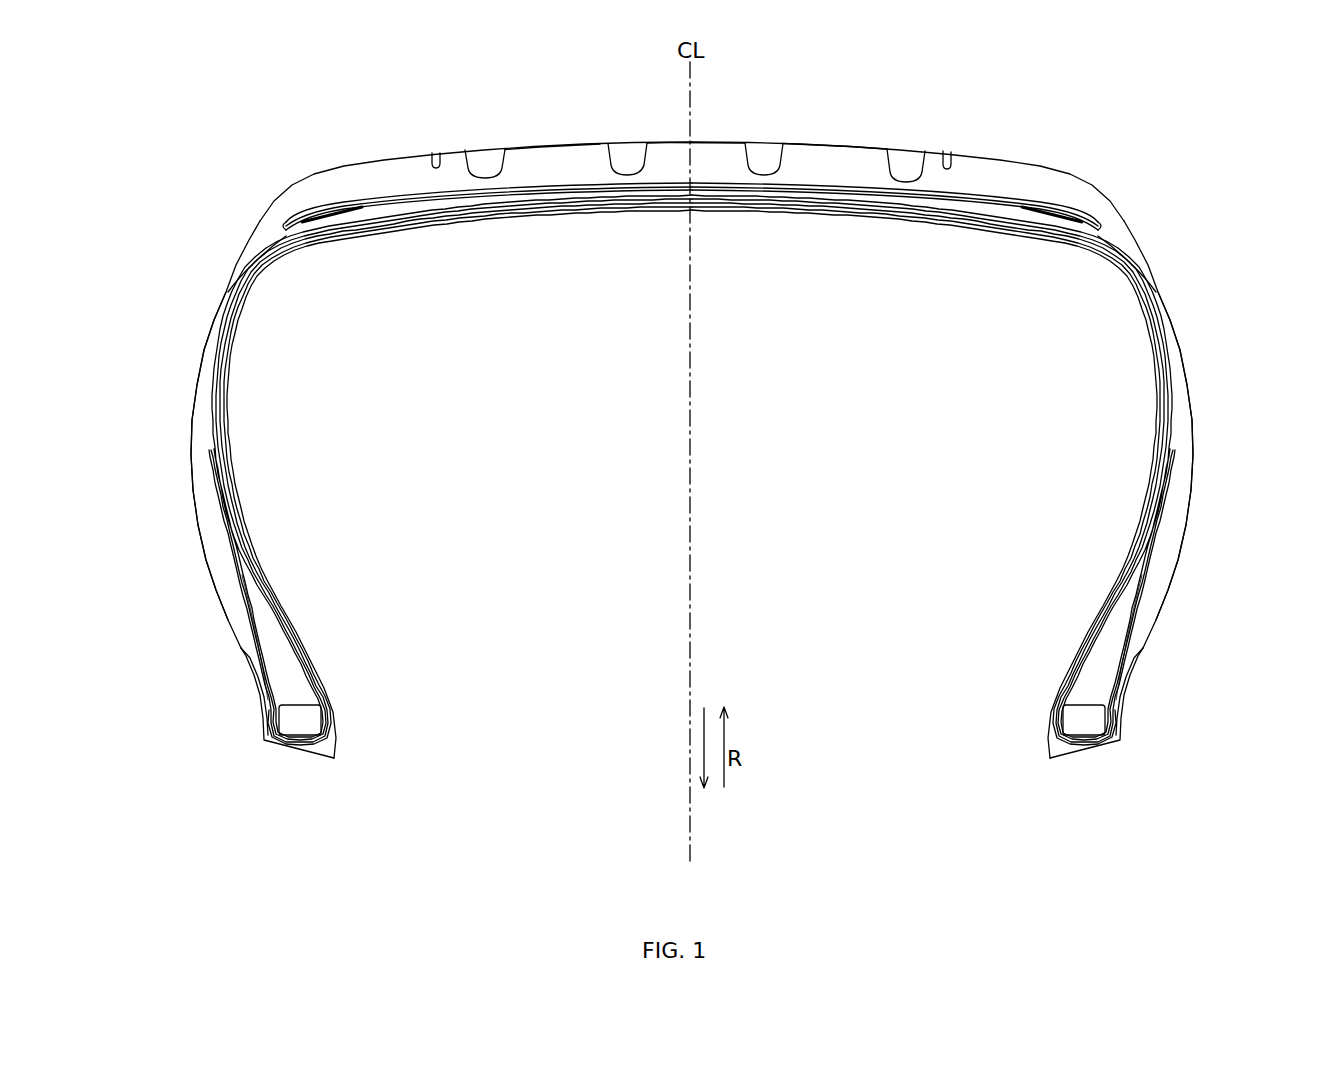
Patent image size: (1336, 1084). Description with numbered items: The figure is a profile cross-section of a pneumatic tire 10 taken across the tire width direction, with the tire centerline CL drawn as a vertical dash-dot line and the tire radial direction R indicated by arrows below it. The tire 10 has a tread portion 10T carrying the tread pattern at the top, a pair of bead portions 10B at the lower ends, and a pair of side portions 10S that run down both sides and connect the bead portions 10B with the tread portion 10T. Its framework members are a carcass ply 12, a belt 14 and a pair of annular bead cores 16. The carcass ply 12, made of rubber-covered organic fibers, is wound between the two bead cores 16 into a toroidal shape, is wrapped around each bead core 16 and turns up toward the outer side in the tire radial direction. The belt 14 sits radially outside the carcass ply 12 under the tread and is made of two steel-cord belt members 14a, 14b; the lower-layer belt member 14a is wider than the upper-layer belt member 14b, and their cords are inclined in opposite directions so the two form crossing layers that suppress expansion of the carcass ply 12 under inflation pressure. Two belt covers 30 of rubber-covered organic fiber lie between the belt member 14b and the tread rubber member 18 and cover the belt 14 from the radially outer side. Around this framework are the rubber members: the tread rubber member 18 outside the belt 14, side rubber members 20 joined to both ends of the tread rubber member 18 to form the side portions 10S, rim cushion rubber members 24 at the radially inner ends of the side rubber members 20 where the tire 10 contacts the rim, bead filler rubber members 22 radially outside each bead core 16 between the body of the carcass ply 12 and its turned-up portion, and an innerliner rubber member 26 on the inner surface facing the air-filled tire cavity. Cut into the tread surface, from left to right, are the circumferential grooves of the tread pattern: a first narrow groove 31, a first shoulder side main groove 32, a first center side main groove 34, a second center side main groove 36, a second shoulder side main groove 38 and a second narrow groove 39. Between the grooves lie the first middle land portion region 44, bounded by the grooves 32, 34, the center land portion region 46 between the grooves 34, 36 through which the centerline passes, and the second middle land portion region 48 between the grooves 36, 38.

The pneumatic tire 10 is at (952, 88).
The tread portion 10T is at (1091, 182).
The side portion 10S is at (1195, 430).
The bead portion 10B is at (1131, 745).
The carcass ply 12 is at (1175, 378).
The belt 14 is at (1200, 198).
The belt member 14a is at (1102, 233).
The belt member 14b is at (1102, 216).
The bead core 16 is at (1088, 718).
The tread rubber member 18 is at (712, 160).
The side rubber member 20 is at (1178, 473).
The bead filler rubber member 22 is at (1118, 626).
The rim cushion rubber member 24 is at (1122, 668).
The innerliner rubber member 26 is at (560, 213).
The belt cover 30 is at (1046, 208).
The first narrow groove 31 is at (436, 150).
The first shoulder side main groove 32 is at (487, 160).
The first center side main groove 34 is at (628, 160).
The second center side main groove 36 is at (764, 160).
The second shoulder side main groove 38 is at (907, 163).
The second narrow groove 39 is at (948, 155).
The first middle land portion region 44 is at (560, 160).
The center land portion region 46 is at (665, 160).
The second middle land portion region 48 is at (817, 160).